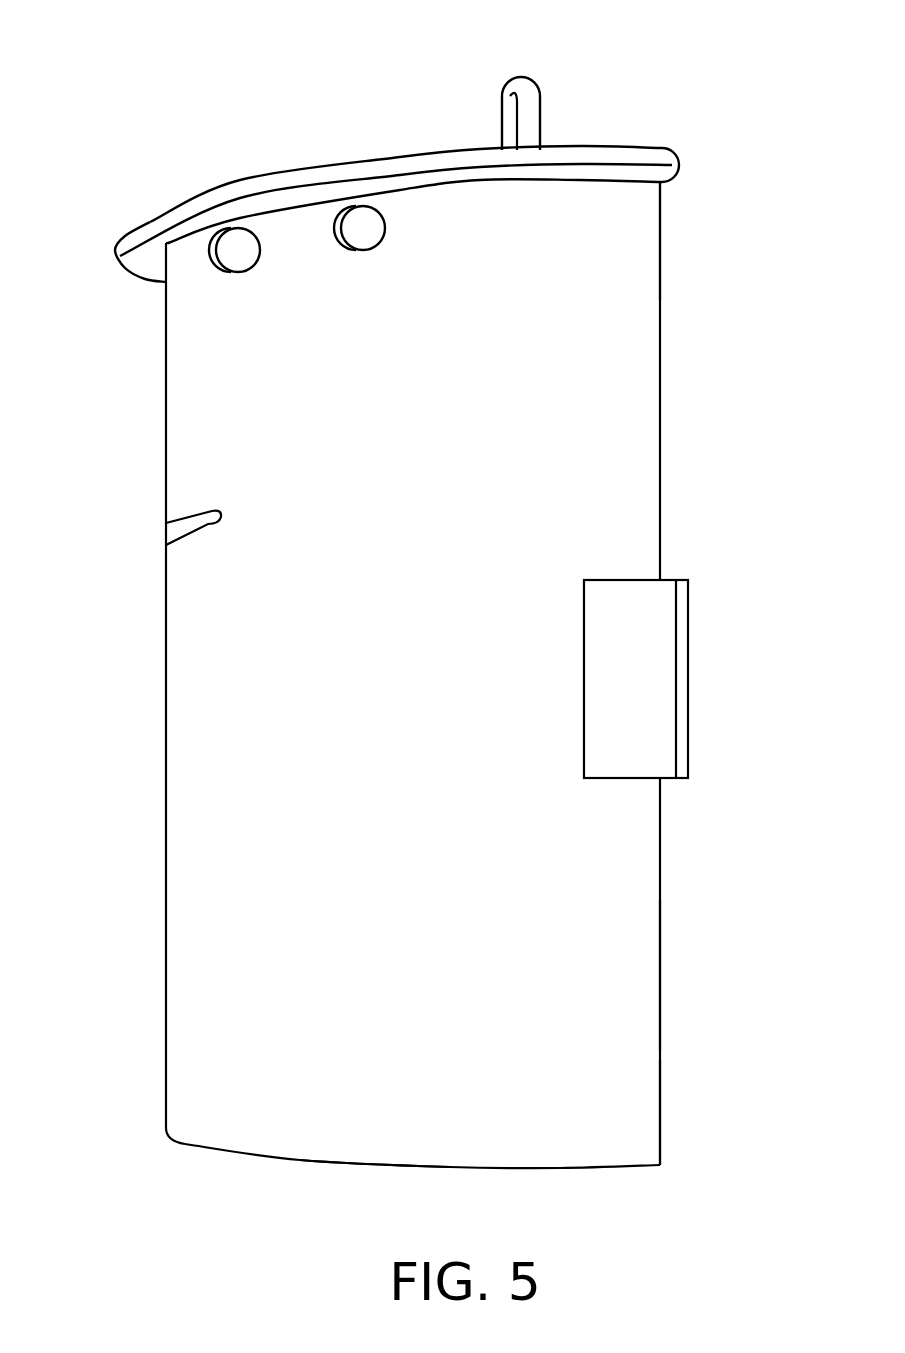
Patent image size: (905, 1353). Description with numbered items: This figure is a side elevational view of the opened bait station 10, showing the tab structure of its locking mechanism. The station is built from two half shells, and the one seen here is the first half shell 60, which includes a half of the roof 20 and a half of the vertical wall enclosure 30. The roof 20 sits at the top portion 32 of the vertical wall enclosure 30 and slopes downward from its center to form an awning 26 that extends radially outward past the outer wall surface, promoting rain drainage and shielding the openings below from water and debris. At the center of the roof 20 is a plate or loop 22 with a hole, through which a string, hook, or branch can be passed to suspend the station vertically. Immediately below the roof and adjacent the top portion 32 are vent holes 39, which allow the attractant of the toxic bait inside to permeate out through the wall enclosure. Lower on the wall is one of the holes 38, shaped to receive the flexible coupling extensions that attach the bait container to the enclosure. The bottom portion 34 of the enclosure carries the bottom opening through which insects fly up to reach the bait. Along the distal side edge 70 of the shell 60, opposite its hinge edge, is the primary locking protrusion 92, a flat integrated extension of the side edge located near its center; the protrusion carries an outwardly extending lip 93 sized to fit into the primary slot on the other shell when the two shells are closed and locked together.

The bait station 10 is at (660, 88).
The roof 20 is at (384, 155).
The loop 22 is at (525, 80).
The awning 26 is at (148, 260).
The vertical wall enclosure 30 is at (166, 670).
The top portion 32 is at (660, 213).
The bottom portion 34 is at (660, 1097).
The holes 38 is at (208, 523).
The vent holes 39 is at (240, 262).
The first half shell 60 is at (373, 1152).
The distal side edge 70 is at (660, 983).
The primary locking protrusion 92 is at (667, 590).
The outwardly extending lip 93 is at (684, 672).